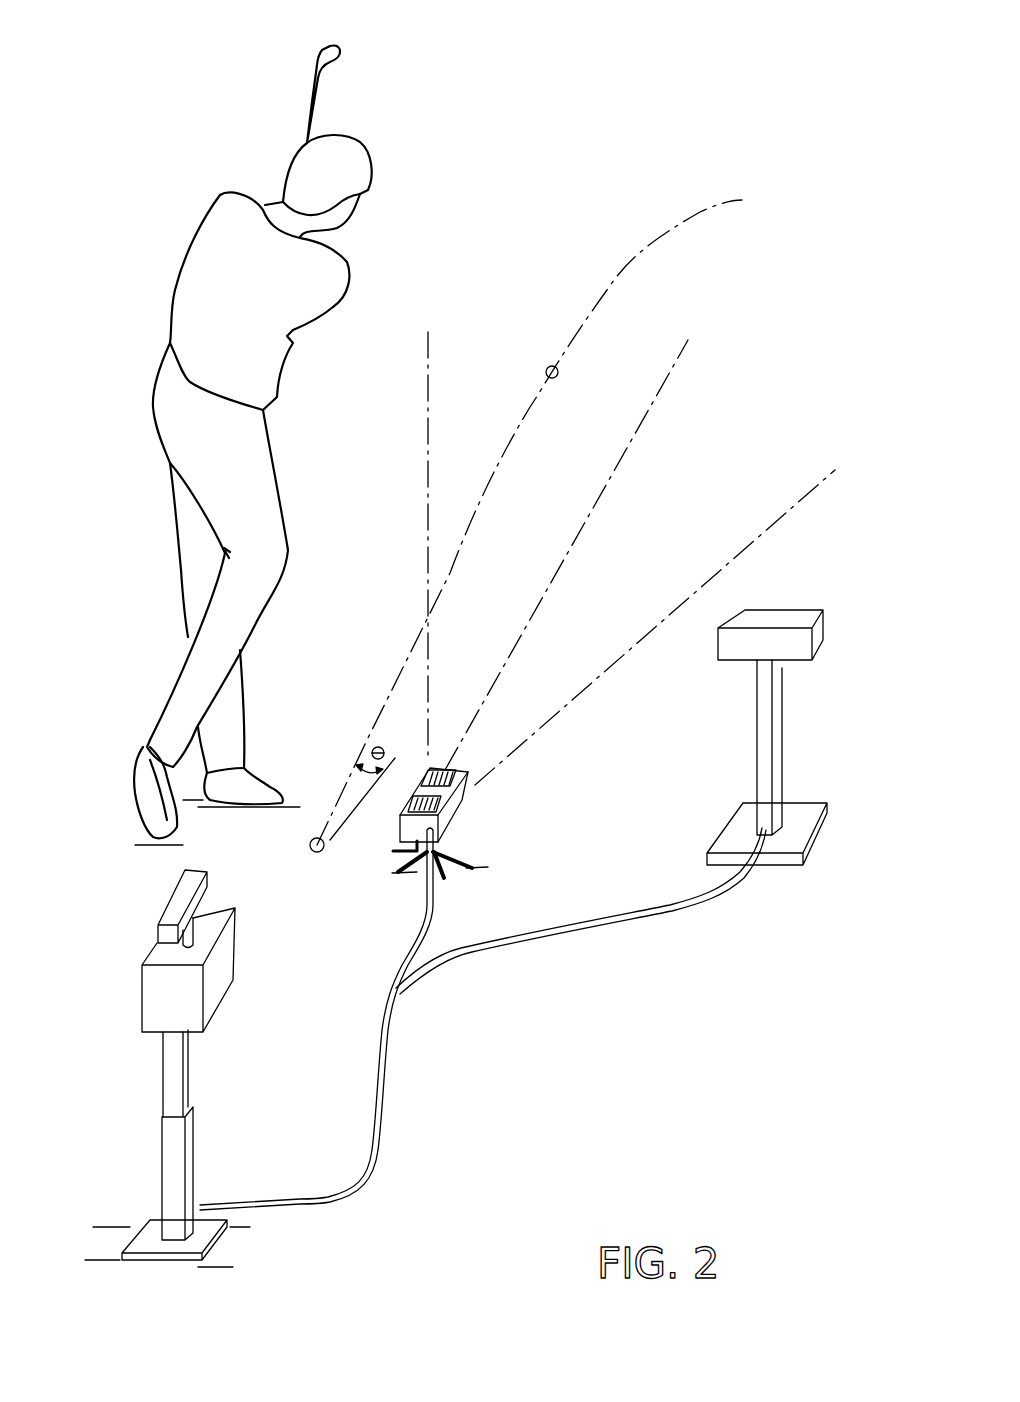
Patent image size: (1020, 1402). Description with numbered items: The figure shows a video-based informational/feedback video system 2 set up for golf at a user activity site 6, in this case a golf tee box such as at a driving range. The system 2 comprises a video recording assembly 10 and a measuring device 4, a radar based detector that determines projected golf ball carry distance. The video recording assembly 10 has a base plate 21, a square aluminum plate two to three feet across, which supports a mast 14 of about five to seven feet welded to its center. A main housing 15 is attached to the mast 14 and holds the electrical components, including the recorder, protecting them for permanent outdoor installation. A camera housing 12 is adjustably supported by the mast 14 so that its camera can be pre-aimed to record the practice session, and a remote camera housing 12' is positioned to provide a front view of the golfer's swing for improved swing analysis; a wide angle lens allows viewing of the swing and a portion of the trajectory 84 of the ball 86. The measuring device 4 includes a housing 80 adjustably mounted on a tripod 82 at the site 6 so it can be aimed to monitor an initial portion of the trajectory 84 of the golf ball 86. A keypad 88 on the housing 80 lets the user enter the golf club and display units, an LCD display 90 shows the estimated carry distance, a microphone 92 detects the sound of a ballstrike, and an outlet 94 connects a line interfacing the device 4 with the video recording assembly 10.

The video-based informational/feedback video system 2 is at (564, 858).
The measuring device 4 is at (522, 819).
The user activity site 6 is at (279, 886).
The video recording assembly 10 is at (701, 1011).
The camera housing 12 is at (138, 909).
The remote camera housing 12' is at (773, 712).
The mast 14 is at (190, 1073).
The main housing 15 is at (210, 995).
The base plate 21 is at (150, 1230).
The housing 80 is at (469, 805).
The tripod 82 is at (462, 864).
The trajectory 84 is at (660, 235).
The golf ball 86 is at (559, 370).
The keypad 88 is at (458, 794).
The LCD display 90 is at (631, 558).
The microphone 92 is at (397, 850).
The outlet 94 is at (447, 836).